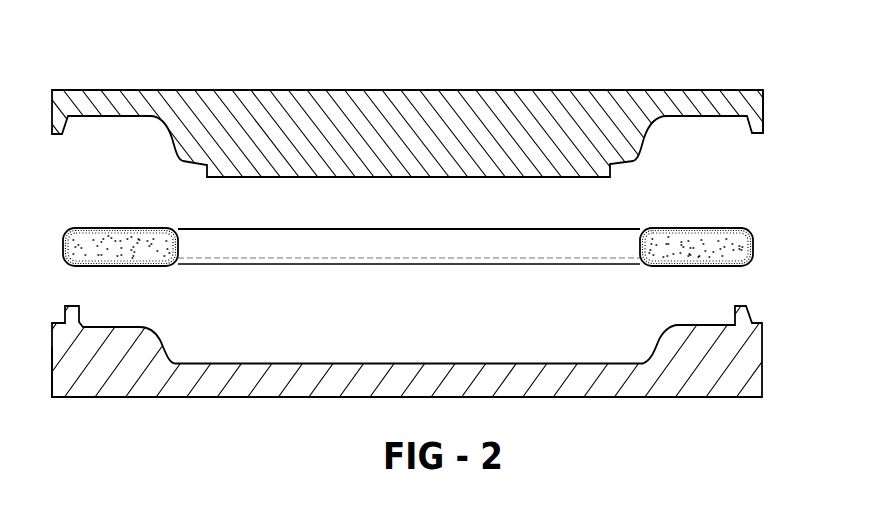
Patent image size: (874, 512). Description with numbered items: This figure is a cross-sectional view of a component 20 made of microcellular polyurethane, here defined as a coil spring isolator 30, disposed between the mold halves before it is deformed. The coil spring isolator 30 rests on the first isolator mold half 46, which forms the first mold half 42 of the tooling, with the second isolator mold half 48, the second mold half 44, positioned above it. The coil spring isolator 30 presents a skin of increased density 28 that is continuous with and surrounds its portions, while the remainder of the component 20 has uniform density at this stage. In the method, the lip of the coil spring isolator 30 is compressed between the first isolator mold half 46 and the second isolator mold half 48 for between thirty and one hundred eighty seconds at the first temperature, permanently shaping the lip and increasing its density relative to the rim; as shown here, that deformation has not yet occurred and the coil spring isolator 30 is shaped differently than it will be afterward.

The component 20 is at (138, 231).
The skin of increased density 28 is at (125, 268).
The coil spring isolator 30 is at (90, 231).
The first mold half 42 is at (58, 347).
The second mold half 44 is at (762, 92).
The first isolator mold half 46 is at (58, 362).
The second isolator mold half 48 is at (762, 112).